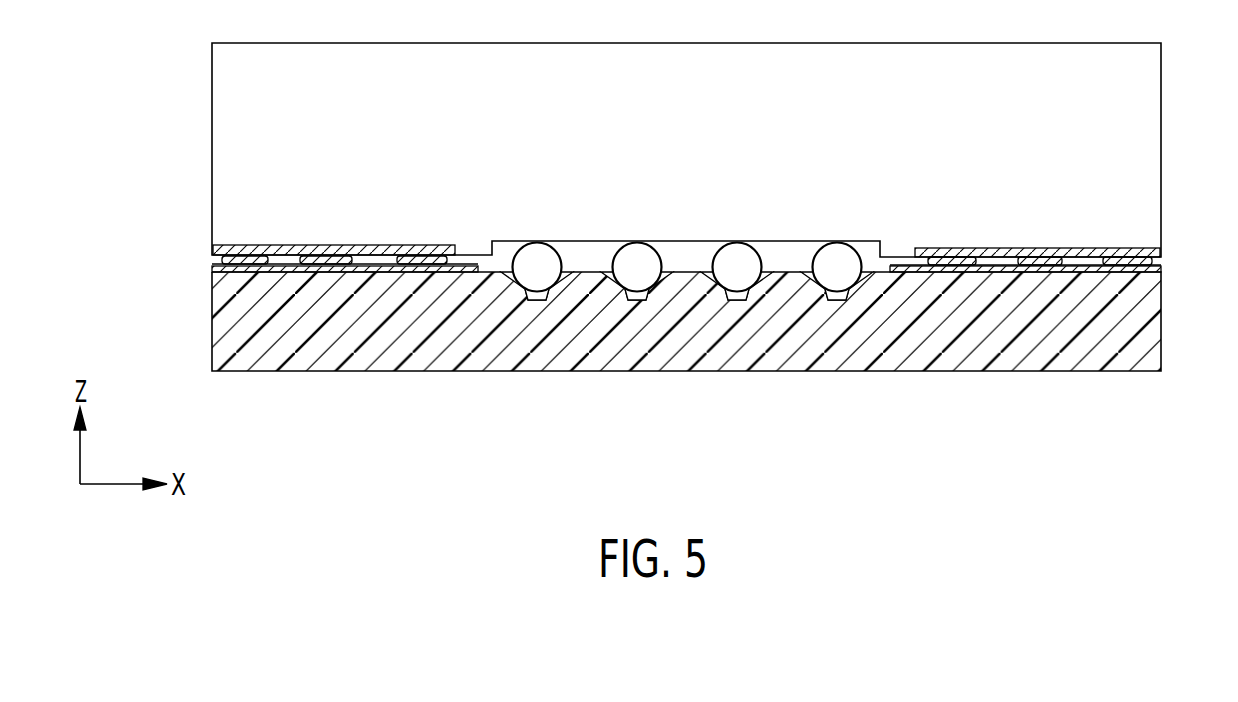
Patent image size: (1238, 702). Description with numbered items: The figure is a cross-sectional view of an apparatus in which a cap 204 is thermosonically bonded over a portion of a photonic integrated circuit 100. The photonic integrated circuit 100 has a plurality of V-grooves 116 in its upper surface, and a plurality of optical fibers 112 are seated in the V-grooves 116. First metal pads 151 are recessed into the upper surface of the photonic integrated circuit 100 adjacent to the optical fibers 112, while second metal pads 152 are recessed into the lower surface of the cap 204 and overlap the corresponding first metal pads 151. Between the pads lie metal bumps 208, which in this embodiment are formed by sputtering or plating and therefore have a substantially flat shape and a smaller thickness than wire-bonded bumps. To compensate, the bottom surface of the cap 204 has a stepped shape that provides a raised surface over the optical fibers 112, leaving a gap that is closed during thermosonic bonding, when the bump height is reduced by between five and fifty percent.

The photonic integrated circuit 100 is at (1152, 338).
The optical fibers 112 is at (522, 290).
The V-grooves 116 is at (537, 300).
The first metal pads 151 is at (212, 275).
The second metal pads 152 is at (212, 248).
The cap 204 is at (1143, 152).
The metal bumps 208 is at (212, 258).